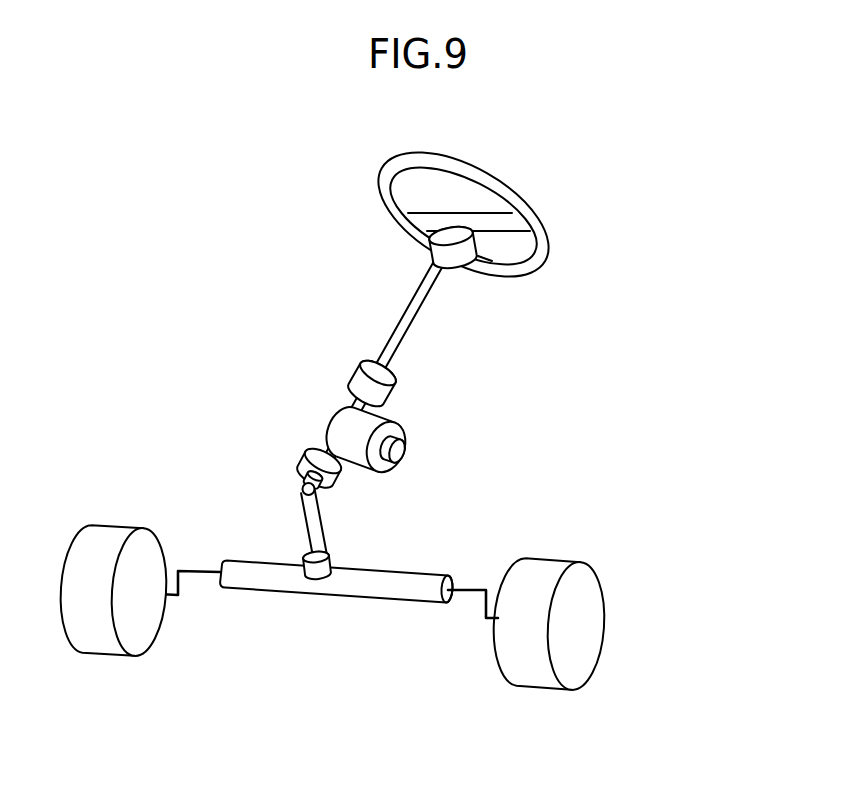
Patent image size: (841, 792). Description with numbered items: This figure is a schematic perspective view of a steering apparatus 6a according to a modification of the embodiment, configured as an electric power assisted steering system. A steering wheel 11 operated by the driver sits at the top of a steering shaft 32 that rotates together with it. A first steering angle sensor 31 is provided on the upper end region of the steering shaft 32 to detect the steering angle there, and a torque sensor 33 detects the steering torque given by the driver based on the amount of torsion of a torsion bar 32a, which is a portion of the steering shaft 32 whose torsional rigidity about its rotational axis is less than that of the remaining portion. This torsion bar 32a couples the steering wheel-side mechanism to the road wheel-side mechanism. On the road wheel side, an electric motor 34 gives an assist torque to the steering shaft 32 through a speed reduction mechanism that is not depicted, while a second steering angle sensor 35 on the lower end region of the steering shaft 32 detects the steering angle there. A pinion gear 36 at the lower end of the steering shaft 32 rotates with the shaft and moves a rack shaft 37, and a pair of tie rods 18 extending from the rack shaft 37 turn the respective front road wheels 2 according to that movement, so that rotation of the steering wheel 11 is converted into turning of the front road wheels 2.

The steering apparatus 6a is at (640, 184).
The steering wheel 11 is at (498, 188).
The first steering angle sensor 31 is at (437, 253).
The steering shaft 32 is at (403, 318).
The torsion bar 32a is at (395, 393).
The torque sensor 33 is at (360, 373).
The electric motor 34 is at (353, 450).
The second steering angle sensor 35 is at (303, 461).
The pinion gear 36 is at (305, 563).
The rack shaft 37 is at (419, 581).
The tie rods 18 is at (196, 578).
The front road wheels 2 is at (95, 647).